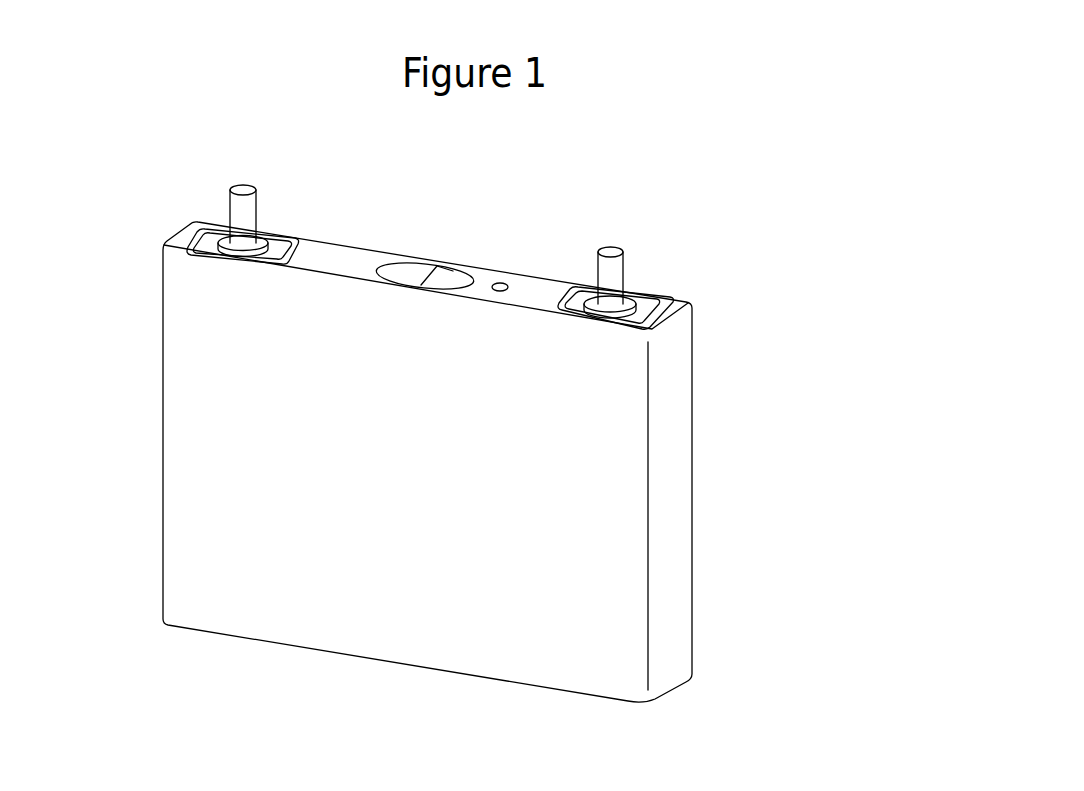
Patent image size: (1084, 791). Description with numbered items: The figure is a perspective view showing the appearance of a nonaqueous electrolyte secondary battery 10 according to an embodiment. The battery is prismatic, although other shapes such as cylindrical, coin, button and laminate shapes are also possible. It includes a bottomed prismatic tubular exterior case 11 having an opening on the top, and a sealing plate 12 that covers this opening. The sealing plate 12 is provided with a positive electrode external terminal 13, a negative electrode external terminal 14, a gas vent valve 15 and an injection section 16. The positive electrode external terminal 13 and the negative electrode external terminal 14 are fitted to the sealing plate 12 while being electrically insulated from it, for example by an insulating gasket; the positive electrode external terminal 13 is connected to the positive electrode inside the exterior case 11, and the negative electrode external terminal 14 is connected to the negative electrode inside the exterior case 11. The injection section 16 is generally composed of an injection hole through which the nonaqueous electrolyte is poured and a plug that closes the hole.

The nonaqueous electrolyte secondary battery 10 is at (727, 160).
The exterior case 11 is at (680, 544).
The sealing plate 12 is at (372, 256).
The positive electrode external terminal 13 is at (250, 187).
The negative electrode external terminal 14 is at (614, 251).
The gas vent valve 15 is at (452, 276).
The injection section 16 is at (505, 283).